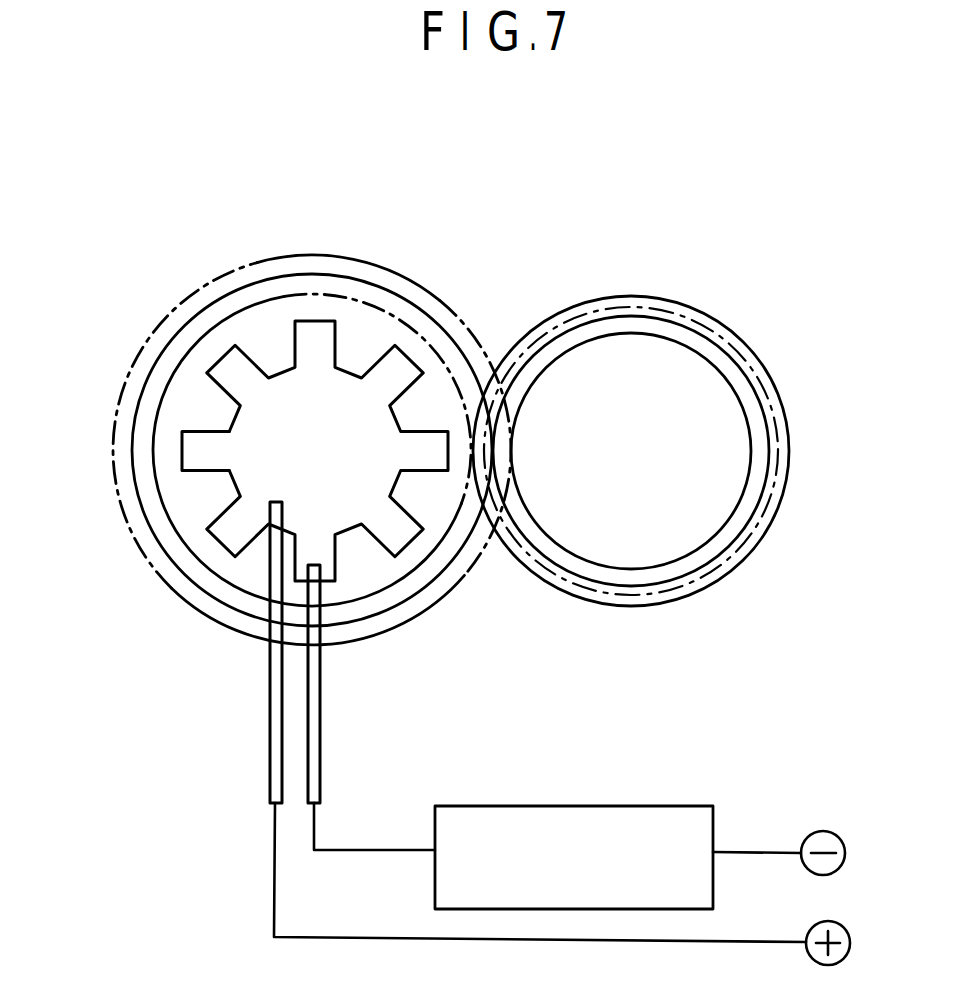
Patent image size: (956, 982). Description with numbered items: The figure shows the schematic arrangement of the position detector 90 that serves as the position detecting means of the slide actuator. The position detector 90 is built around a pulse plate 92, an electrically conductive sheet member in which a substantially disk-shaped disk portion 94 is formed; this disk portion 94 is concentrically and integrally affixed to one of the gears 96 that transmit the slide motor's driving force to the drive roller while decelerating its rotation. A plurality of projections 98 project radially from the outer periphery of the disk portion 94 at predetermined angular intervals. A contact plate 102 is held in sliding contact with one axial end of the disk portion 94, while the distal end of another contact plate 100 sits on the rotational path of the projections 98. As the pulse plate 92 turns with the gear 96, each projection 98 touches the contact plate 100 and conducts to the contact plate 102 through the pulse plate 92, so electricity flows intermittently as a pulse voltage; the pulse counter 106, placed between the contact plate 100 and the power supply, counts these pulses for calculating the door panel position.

The position detector 90 is at (445, 744).
The pulse plate 92 is at (291, 396).
The disk portion 94 is at (250, 457).
The gears 96 is at (340, 308).
The projections 98 is at (187, 451).
The contact plate 100 is at (313, 750).
The contact plate 102 is at (262, 774).
The pulse counter 106 is at (572, 805).